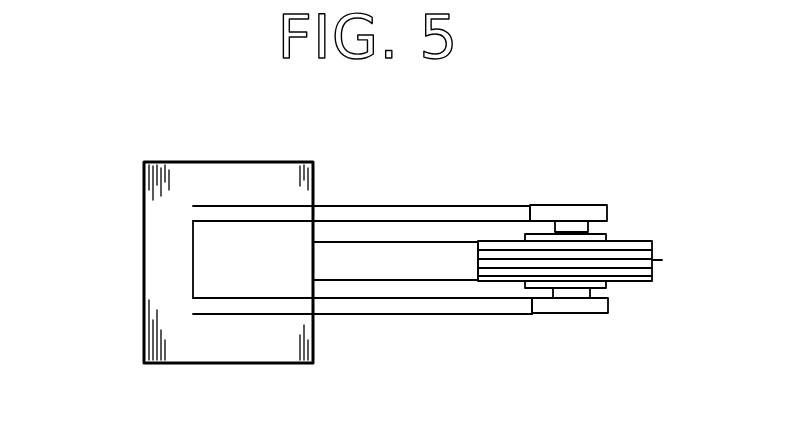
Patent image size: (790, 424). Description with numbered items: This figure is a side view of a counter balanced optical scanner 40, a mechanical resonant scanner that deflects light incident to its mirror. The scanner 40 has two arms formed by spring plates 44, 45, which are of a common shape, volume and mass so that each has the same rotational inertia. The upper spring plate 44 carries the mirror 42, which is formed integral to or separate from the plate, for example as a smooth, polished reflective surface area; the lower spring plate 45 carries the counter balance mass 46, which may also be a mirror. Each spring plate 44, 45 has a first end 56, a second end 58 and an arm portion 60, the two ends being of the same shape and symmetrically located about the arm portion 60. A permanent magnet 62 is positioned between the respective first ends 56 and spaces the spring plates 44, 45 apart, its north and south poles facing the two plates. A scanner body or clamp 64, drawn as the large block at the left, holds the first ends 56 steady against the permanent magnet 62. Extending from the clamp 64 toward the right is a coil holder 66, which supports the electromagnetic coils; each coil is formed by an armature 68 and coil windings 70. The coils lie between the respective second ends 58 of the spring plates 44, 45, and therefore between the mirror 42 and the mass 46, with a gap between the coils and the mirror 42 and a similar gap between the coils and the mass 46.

The counter balanced optical scanner 40 is at (613, 96).
The mirror 42 is at (560, 205).
The spring plate 44 is at (359, 207).
The spring plate 45 is at (403, 315).
The counter balance mass 46 is at (583, 315).
The first end 56 is at (230, 203).
The second end 58 is at (607, 208).
The arm portion 60 is at (423, 207).
The permanent magnet 62 is at (292, 242).
The scanner body or clamp 64 is at (143, 208).
The coil holder 66 is at (450, 257).
The armature 68 is at (607, 235).
The coil windings 70 is at (662, 260).